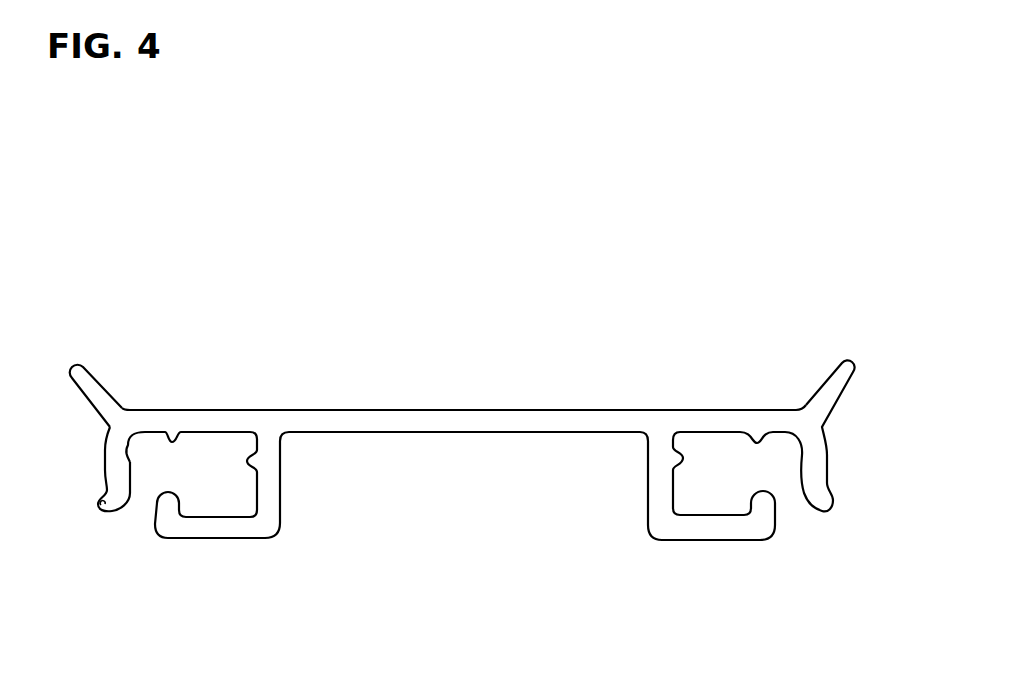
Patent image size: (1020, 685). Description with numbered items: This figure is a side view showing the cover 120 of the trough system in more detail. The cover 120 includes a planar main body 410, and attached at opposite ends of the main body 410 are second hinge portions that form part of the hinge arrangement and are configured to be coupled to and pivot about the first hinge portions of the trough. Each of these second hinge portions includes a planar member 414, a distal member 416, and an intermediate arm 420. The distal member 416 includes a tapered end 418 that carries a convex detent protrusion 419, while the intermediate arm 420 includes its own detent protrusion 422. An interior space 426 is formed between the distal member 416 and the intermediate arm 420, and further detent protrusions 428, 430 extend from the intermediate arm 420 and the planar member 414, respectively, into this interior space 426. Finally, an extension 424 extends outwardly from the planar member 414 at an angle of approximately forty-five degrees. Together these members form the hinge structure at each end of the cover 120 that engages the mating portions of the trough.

The cover 120 is at (547, 175).
The planar main body 410 is at (482, 410).
The planar member 414 is at (205, 410).
The distal member 416 is at (105, 463).
The tapered end 418 is at (92, 496).
The convex detent protrusion 419 is at (150, 422).
The intermediate arm 420 is at (268, 515).
The detent protrusion 422 is at (167, 500).
The extension 424 is at (85, 382).
The interior space 426 is at (210, 497).
The detent protrusion 428 is at (253, 458).
The detent protrusion 430 is at (150, 422).